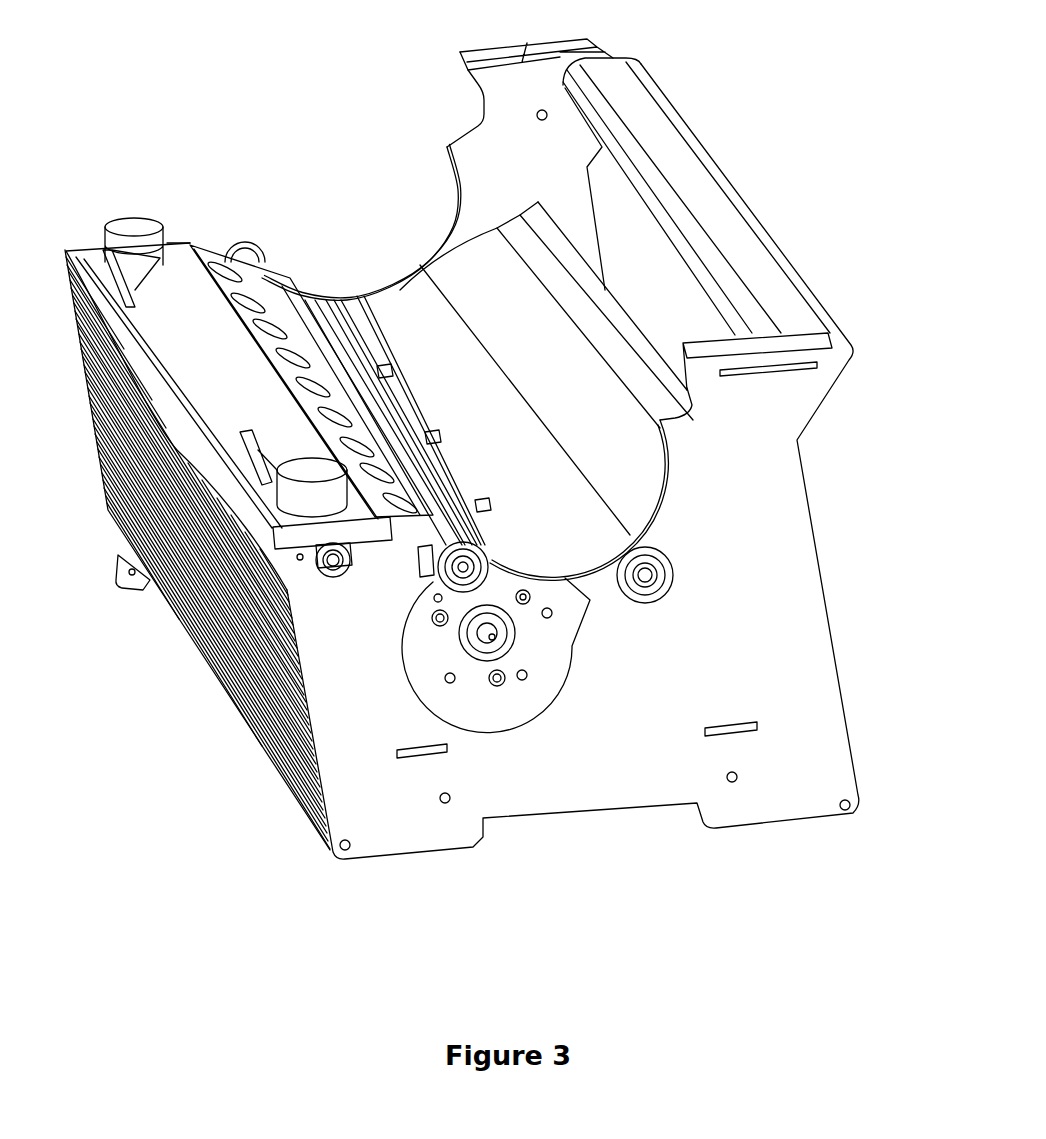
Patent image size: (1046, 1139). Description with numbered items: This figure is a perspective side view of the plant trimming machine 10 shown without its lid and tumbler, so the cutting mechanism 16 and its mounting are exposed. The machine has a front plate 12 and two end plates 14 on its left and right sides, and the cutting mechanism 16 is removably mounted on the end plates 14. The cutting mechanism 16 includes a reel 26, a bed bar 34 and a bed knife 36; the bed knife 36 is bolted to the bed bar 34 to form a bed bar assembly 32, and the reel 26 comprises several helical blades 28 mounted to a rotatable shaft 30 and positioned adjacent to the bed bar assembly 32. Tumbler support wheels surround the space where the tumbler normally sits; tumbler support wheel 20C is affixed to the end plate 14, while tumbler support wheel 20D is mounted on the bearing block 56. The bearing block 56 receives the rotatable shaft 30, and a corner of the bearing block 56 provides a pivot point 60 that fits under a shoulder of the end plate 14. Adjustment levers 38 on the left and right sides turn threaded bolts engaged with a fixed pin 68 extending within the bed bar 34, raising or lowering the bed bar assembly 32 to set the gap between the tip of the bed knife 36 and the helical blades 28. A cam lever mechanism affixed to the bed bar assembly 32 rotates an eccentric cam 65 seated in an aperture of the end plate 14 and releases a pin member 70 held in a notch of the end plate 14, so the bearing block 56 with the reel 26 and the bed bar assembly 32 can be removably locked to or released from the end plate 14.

The plant trimming machine 10 is at (330, 74).
The front plate 12 is at (240, 627).
The end plate 14 is at (435, 808).
The cutting mechanism 16 is at (280, 220).
The tumbler support wheel 20C is at (648, 588).
The tumbler support wheel 20D is at (457, 563).
The reel 26 is at (330, 274).
The helical blades 28 is at (425, 413).
The rotatable shaft 30 is at (483, 638).
The bed bar assembly 32 is at (183, 216).
The bed bar 34 is at (213, 392).
The bed knife 36 is at (240, 308).
The adjustment lever 38 is at (316, 482).
The bearing block 56 is at (500, 716).
The pivot point 60 is at (573, 600).
The eccentric cam 65 is at (347, 568).
The fixed pin 68 is at (330, 560).
The pin member 70 is at (427, 548).